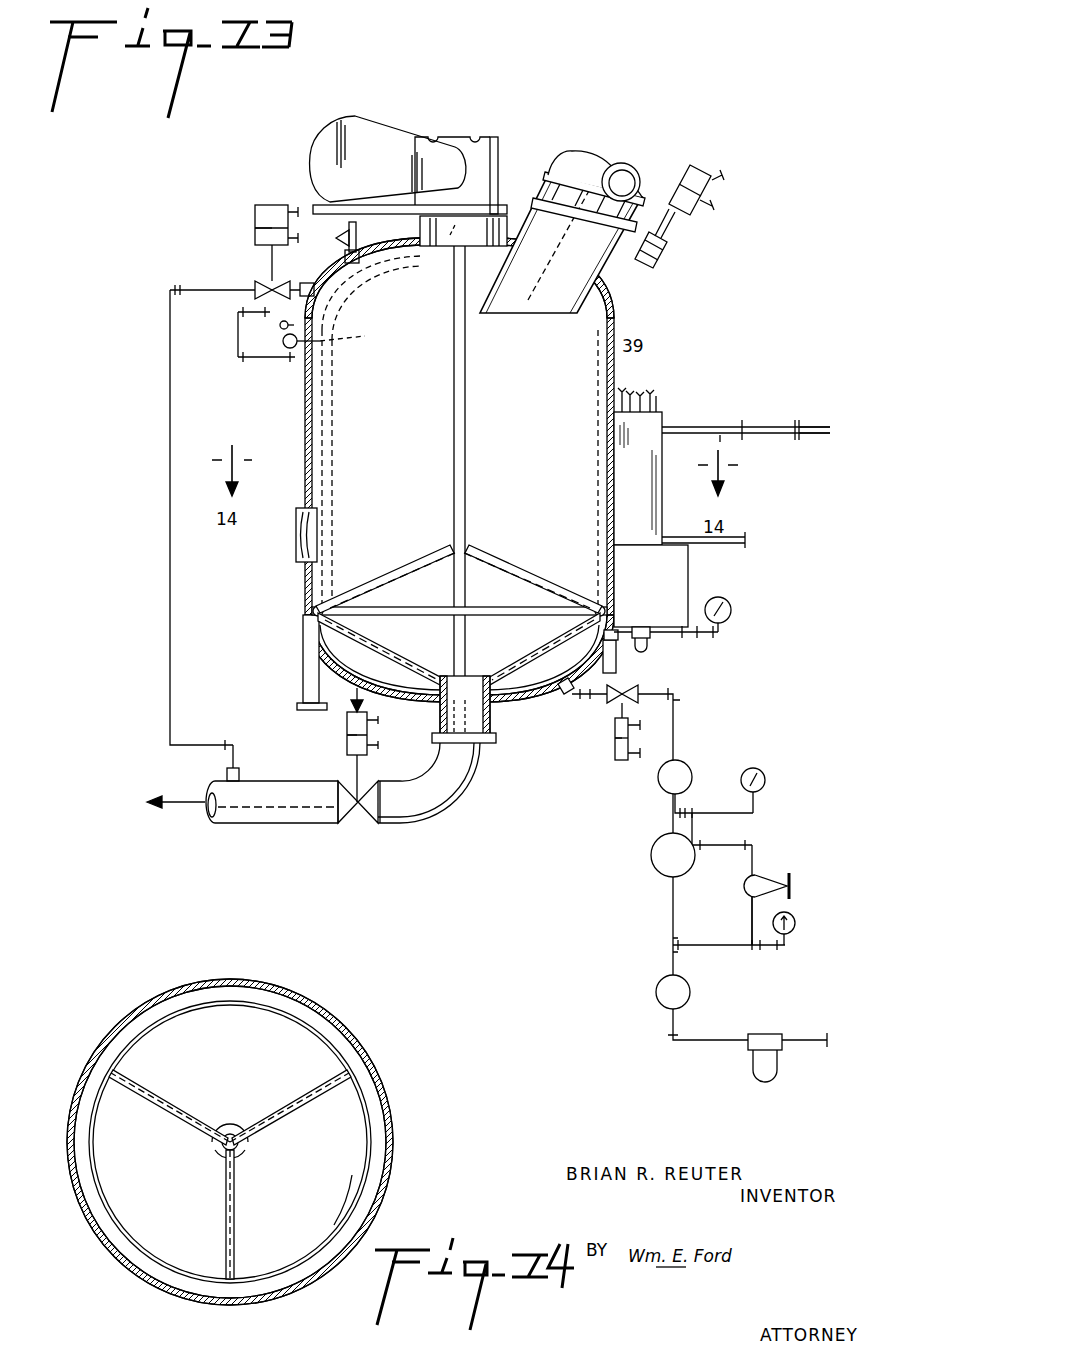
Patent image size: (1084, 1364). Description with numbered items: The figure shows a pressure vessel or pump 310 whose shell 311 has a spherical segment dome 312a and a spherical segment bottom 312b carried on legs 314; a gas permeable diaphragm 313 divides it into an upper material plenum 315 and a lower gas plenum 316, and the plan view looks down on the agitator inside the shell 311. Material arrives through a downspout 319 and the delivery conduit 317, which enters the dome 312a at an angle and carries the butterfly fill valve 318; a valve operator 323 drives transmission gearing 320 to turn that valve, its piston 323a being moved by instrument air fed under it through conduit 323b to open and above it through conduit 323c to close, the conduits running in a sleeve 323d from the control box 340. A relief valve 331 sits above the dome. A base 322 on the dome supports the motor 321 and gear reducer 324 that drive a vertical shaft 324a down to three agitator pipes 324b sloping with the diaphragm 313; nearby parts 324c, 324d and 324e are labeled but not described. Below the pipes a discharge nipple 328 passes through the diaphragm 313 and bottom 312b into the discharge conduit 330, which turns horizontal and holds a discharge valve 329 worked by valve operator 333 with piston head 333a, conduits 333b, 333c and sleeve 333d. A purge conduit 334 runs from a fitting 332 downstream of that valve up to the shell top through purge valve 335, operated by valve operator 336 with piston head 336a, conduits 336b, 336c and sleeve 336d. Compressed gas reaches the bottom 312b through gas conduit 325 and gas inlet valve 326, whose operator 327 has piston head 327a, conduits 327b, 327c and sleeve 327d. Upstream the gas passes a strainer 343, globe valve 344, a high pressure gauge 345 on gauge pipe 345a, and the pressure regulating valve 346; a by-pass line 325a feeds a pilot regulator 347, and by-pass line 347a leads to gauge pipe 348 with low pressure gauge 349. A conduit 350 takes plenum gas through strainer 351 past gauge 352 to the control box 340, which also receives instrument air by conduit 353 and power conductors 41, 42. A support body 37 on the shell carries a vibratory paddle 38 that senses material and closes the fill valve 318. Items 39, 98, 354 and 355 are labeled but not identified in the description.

In FIG. 13, the pressure vessel or pump 310 is at (636, 326).
In FIG. 14, the pressure vessel or pump 310 is at (98, 1025).
In FIG. 13, the shell 311 is at (305, 425).
In FIG. 14, the shell 311 is at (362, 1060).
In FIG. 13, the spherical segment dome 312a is at (420, 236).
In FIG. 13, the spherical segment bottom 312b is at (548, 700).
In FIG. 13, the gas permeable membrane or diaphragm 313 is at (360, 620).
In FIG. 14, the gas permeable membrane or diaphragm 313 is at (204, 1238).
In FIG. 13, the legs 314 is at (303, 660).
In FIG. 13, the upper or material plenum 315 is at (580, 555).
In FIG. 14, the upper or material plenum 315 is at (234, 1089).
In FIG. 13, the lower or gas plenum 316 is at (562, 675).
In FIG. 13, the material delivery conduit 317 is at (552, 282).
In FIG. 13, the butterfly fill valve 318 is at (542, 178).
In FIG. 13, the downspout 319 is at (638, 172).
In FIG. 13, the transmission gearing 320 is at (668, 260).
In FIG. 13, the motor 321 is at (316, 203).
In FIG. 13, the base 322 is at (396, 200).
In FIG. 13, the valve operator 323 is at (702, 165).
In FIG. 13, the piston 323a is at (680, 187).
In FIG. 13, the conduit 323b is at (712, 208).
In FIG. 13, the conduit 323c is at (722, 178).
In FIG. 13, the conductor cord or sleeve 323d is at (622, 390).
In FIG. 13, the gear reducer 324 is at (465, 142).
In FIG. 13, the vertical shaft 324a is at (454, 428).
In FIG. 14, the vertical shaft 324a is at (222, 1165).
In FIG. 13, the agitator blades or pipes 324b is at (438, 668).
In FIG. 13, the horizontal frame arm 324c is at (322, 605).
In FIG. 14, the horizontal frame arm 324c is at (360, 1188).
In FIG. 13, the upper brace 324d is at (384, 578).
In FIG. 14, the upper brace 324d is at (300, 1098).
In FIG. 13, the shaft flange 324e is at (447, 248).
In FIG. 13, the compressed gas conduit 325 is at (680, 718).
In FIG. 13, the by-pass line 325a is at (750, 875).
In FIG. 13, the gas inlet valve 326 is at (610, 684).
In FIG. 13, the valve operator 327 is at (614, 752).
In FIG. 13, the piston head 327a is at (614, 752).
In FIG. 13, the conduit 327b is at (638, 726).
In FIG. 13, the conduit 327c is at (638, 760).
In FIG. 13, the conductor cord or sleeve 327d is at (660, 400).
In FIG. 13, the discharge pipe or nipple 328 is at (490, 732).
In FIG. 14, the discharge pipe or nipple 328 is at (250, 1143).
In FIG. 13, the discharge valve 329 is at (368, 795).
In FIG. 13, the discharge conduit 330 is at (258, 820).
In FIG. 13, the relief valve 331 is at (340, 240).
In FIG. 13, the connection fitting 332 is at (240, 772).
In FIG. 13, the valve operator 333 is at (357, 700).
In FIG. 13, the piston head 333a is at (347, 738).
In FIG. 13, the conduit 333b is at (378, 749).
In FIG. 13, the conduit 333c is at (378, 716).
In FIG. 13, the conductor cord or sleeve 333d is at (632, 392).
In FIG. 13, the purge conduit 334 is at (168, 460).
In FIG. 13, the purge valve 335 is at (262, 285).
In FIG. 13, the valve operator 336 is at (268, 204).
In FIG. 13, the piston head 336a is at (255, 214).
In FIG. 13, the conduit 336b is at (298, 243).
In FIG. 13, the conduit 336c is at (300, 200).
In FIG. 13, the conductor cord or sleeve 336d is at (644, 394).
In FIG. 13, the control box 340 is at (656, 465).
In FIG. 13, the strainer 343 is at (755, 1062).
In FIG. 13, the globe valve 344 is at (656, 992).
In FIG. 13, the high pressure gauge 345 is at (795, 918).
In FIG. 13, the gauge pipe 345a is at (730, 948).
In FIG. 13, the pressure regulating valve 346 is at (650, 856).
In FIG. 13, the pilot regulating valve or regulator 347 is at (765, 874).
In FIG. 13, the by-pass line 347a is at (694, 834).
In FIG. 13, the upstanding gauge pipe 348 is at (756, 802).
In FIG. 13, the low pressure gauge 349 is at (767, 776).
In FIG. 13, the conduit 350 is at (690, 578).
In FIG. 13, the strainer 351 is at (650, 648).
In FIG. 13, the gauge 352 is at (731, 611).
In FIG. 13, the conduit 353 is at (745, 535).
In FIG. 13, the valve meter 354 is at (690, 766).
In FIG. 13, the connecting pipe 355 is at (746, 433).
In FIG. 13, the support body 37 is at (283, 342).
In FIG. 13, the vibratory paddle 38 is at (340, 338).
In FIG. 13, the bracket 39 is at (243, 360).
In FIG. 13, the power conductor 41 is at (783, 425).
In FIG. 13, the power conductor 42 is at (783, 435).
In FIG. 13, the fitting 98 is at (282, 323).